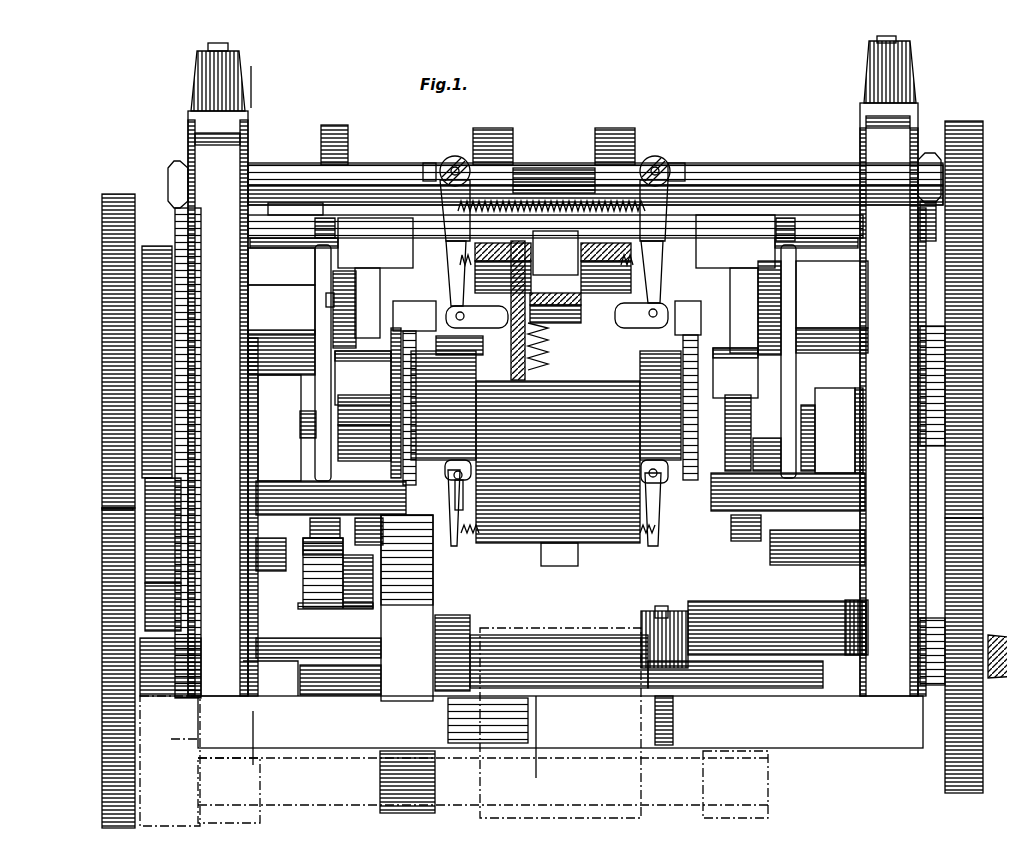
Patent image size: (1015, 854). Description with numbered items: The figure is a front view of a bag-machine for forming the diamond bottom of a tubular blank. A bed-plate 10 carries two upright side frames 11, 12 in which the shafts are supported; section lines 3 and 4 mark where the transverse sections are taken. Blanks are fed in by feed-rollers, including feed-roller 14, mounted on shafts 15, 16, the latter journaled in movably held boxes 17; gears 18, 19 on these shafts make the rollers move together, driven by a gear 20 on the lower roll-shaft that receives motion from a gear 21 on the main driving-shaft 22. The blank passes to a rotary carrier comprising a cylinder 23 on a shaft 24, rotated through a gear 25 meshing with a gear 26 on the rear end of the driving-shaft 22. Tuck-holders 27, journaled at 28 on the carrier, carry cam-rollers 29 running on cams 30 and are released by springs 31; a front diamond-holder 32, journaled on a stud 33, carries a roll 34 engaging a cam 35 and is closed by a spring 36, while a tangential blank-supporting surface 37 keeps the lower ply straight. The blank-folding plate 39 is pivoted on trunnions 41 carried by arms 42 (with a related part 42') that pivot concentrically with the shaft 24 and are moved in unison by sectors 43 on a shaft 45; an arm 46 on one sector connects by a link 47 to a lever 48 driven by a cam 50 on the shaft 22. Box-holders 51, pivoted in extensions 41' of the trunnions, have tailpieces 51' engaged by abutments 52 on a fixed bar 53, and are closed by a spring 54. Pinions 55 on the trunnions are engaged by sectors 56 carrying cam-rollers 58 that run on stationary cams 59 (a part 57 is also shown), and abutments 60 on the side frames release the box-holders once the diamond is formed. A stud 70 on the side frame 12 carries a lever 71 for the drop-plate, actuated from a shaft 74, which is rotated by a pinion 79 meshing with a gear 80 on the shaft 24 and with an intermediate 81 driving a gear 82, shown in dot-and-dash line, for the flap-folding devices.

The section line 3 3 is at (249, 418).
The section line 4 4 is at (519, 192).
The bed-plate 10 is at (560, 704).
The side frame 11 is at (223, 369).
The side frame 12 is at (893, 366).
The feed-roller 14 is at (484, 126).
The shaft 15 is at (281, 330).
The shaft 16 is at (276, 242).
The box 17 is at (166, 218).
The gear 18 is at (325, 292).
The gear 19 is at (341, 134).
The gear 20 is at (94, 292).
The gear 21 is at (94, 552).
The driving-shaft 22 is at (514, 638).
The cylinder 23 is at (558, 392).
The shaft 24 is at (134, 400).
The gear 25 is at (937, 280).
The gear 26 is at (940, 762).
The tuck-holder 27 is at (445, 272).
The journal 28 is at (660, 486).
The cam-roller 29 is at (555, 395).
The cam 30 is at (546, 405).
The spring 31 is at (450, 253).
The front diamond-holder 32 is at (554, 568).
The stud 33 is at (560, 297).
The roll 34 is at (562, 321).
The cam 35 is at (522, 362).
The spring 36 is at (459, 345).
The tangential blank-supporting surface 37 is at (532, 550).
The plate 39 is at (640, 170).
The trunnion 41 is at (554, 284).
The extension 41' is at (592, 183).
The arm 42 is at (557, 308).
The pinion 42' is at (558, 409).
The sector 43 is at (358, 581).
The shaft 45 is at (447, 500).
The arm 46 is at (360, 432).
The link 47 is at (299, 573).
The lever 48 is at (340, 601).
The cam 50 is at (425, 664).
The box-holder 51 is at (587, 155).
The tailpiece 51' is at (570, 133).
The abutment 52 is at (420, 155).
The fixed shaft or bar 53 is at (540, 175).
The spring 54 is at (580, 175).
The pinion 55 is at (307, 232).
The sector 56 is at (307, 262).
The collar 57 is at (292, 420).
The cam-roller 58 is at (302, 519).
The cam 59 is at (560, 480).
The abutment 60 is at (414, 316).
The stud 70 is at (640, 615).
The lever 71 is at (680, 598).
The shaft 74 is at (778, 595).
The pinion 79 is at (140, 588).
The gear 80 is at (137, 452).
The intermediate 81 is at (138, 620).
The gear 82 is at (112, 772).